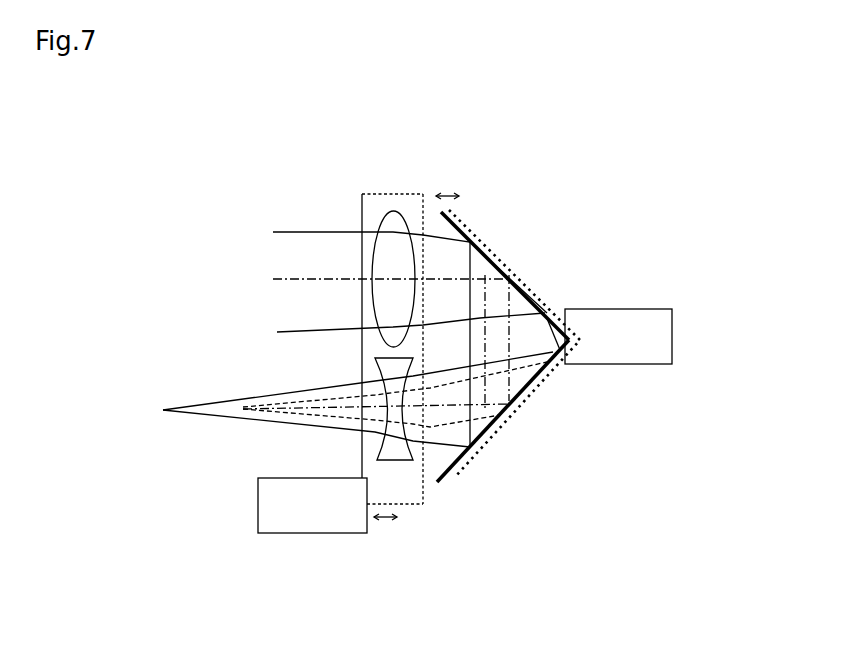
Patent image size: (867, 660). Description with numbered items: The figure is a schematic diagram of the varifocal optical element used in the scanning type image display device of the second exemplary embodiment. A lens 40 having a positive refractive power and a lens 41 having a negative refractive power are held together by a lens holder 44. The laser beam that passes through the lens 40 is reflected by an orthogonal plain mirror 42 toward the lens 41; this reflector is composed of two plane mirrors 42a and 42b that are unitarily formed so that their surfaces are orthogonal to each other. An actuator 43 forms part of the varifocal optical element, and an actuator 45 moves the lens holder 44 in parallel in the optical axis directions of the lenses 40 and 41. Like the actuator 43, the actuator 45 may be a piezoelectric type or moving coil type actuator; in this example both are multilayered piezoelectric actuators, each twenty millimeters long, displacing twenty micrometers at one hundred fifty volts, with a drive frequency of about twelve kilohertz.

The lens 40 is at (393, 220).
The lens 41 is at (395, 453).
The orthogonal plain mirror 42 is at (540, 255).
The plane mirror 42a is at (462, 220).
The plane mirror 42b is at (500, 418).
The actuator 43 is at (643, 327).
The lens holder 44 is at (362, 194).
The actuator 45 is at (303, 535).